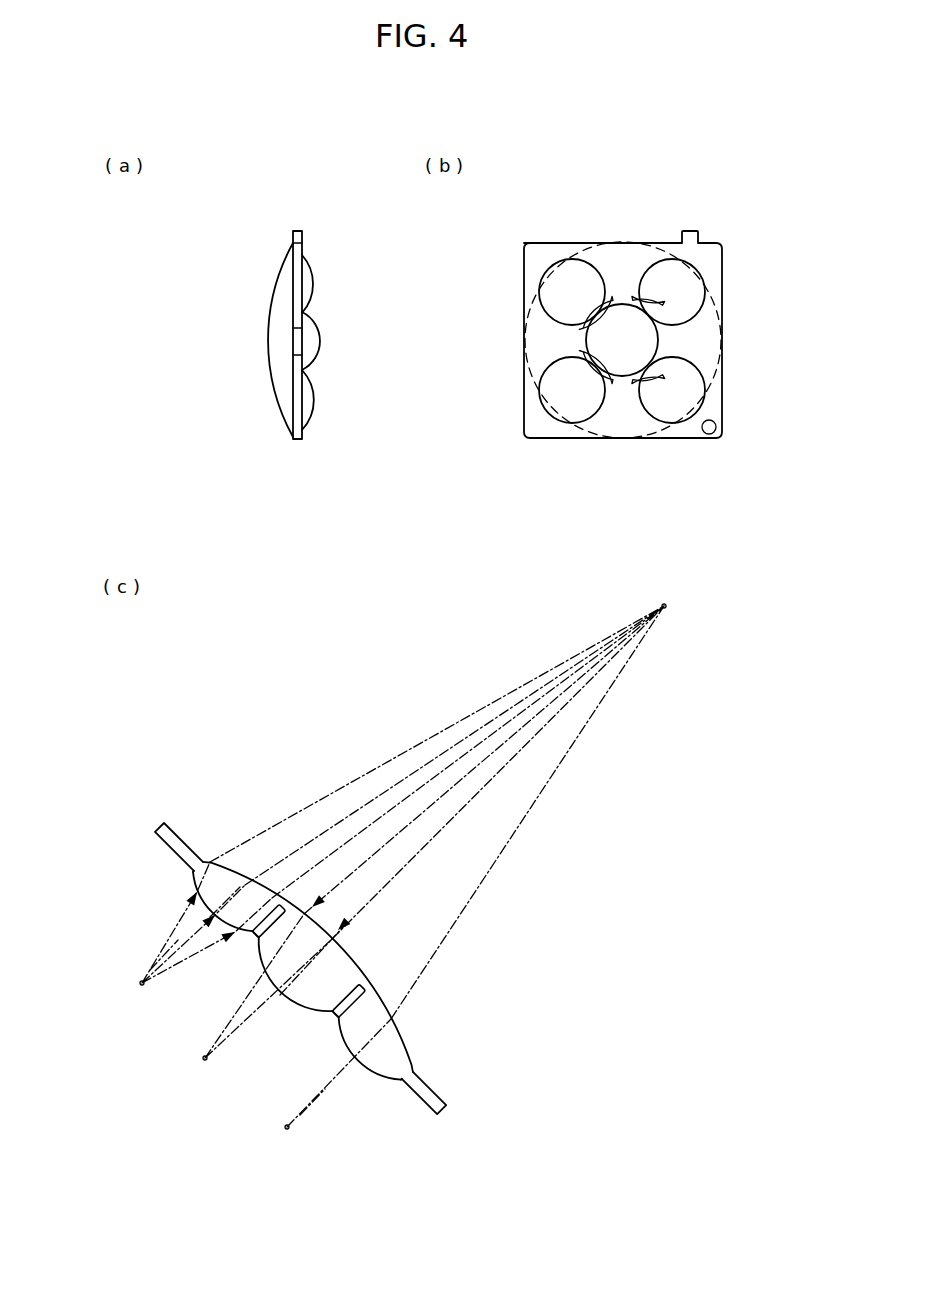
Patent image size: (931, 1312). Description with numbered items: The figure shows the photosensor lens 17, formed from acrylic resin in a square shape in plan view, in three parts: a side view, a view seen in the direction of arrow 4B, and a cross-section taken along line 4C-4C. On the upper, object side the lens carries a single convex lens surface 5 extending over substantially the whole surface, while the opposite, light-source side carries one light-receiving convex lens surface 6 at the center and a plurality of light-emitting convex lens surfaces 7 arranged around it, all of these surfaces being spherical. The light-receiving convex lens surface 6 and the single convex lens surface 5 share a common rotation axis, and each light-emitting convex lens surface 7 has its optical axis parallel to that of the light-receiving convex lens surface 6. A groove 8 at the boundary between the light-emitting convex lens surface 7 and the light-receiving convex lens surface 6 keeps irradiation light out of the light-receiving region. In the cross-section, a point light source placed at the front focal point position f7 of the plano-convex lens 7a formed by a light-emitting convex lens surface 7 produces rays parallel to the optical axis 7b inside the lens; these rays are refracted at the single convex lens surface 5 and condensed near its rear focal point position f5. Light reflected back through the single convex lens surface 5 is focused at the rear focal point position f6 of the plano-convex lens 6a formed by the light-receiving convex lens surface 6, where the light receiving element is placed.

The single convex lens surface 5 is at (272, 390).
The light-receiving convex lens surface 6 is at (320, 349).
The light-emitting convex lens surface 7 is at (310, 268).
The groove 8 is at (650, 308).
The photosensor lens 17 is at (248, 281).
The arrow 4B is at (393, 343).
The line 4C- 4C is at (520, 239).
The plano-convex lens 6a is at (300, 980).
The plano-convex lens 7a is at (228, 888).
The optical axis 7b is at (167, 960).
The rear focal point position f5 is at (667, 610).
The rear focal point position f6 is at (204, 1062).
The front focal point position f7 is at (138, 983).